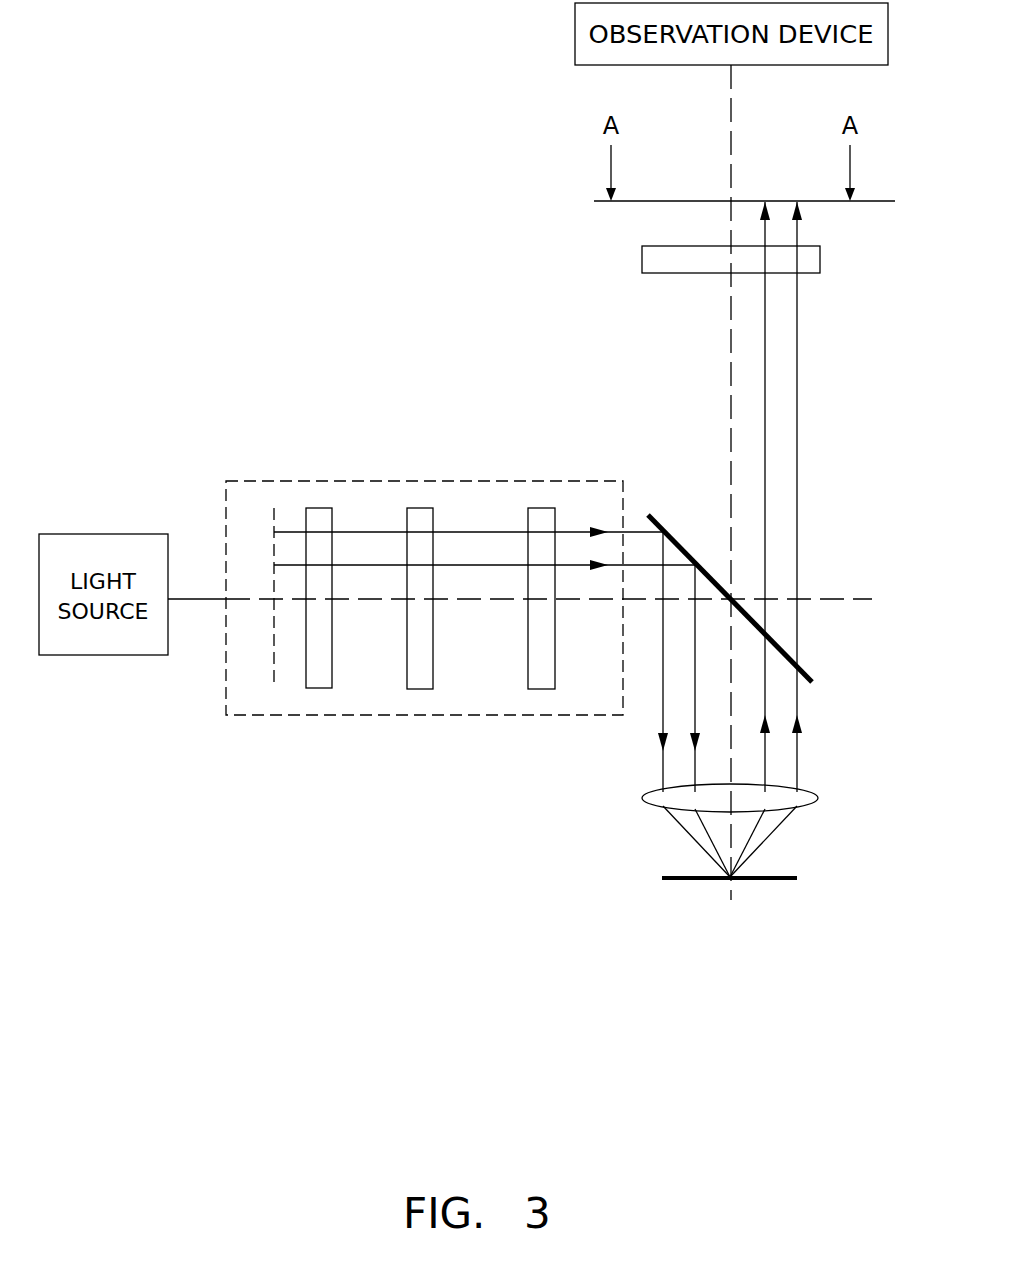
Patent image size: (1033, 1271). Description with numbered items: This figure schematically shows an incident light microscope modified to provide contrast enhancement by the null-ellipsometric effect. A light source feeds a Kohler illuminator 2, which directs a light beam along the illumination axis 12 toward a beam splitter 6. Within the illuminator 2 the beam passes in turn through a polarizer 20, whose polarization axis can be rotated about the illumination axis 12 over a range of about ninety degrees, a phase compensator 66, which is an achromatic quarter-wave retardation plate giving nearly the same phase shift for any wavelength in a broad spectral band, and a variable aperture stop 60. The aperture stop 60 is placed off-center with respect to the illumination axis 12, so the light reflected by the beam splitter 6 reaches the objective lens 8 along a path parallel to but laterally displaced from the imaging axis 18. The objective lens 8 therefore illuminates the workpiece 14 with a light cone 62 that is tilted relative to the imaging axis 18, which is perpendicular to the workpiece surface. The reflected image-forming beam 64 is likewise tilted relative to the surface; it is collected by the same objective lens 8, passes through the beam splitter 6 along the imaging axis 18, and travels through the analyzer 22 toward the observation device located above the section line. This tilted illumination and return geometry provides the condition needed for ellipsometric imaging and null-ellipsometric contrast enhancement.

The Kohler illuminator 2 is at (424, 551).
The polarizer 20 is at (348, 537).
The phase compensator 66 is at (451, 539).
The variable aperture stop 60 is at (569, 539).
The analyzer 22 is at (775, 277).
The imaging axis 18 is at (819, 482).
The reflected image-forming beam 64 is at (834, 497).
The illumination axis 12 is at (567, 535).
The beam splitter 6 is at (770, 598).
The objective lens 8 is at (767, 767).
The light cone 62 is at (669, 835).
The workpiece 14 is at (785, 917).